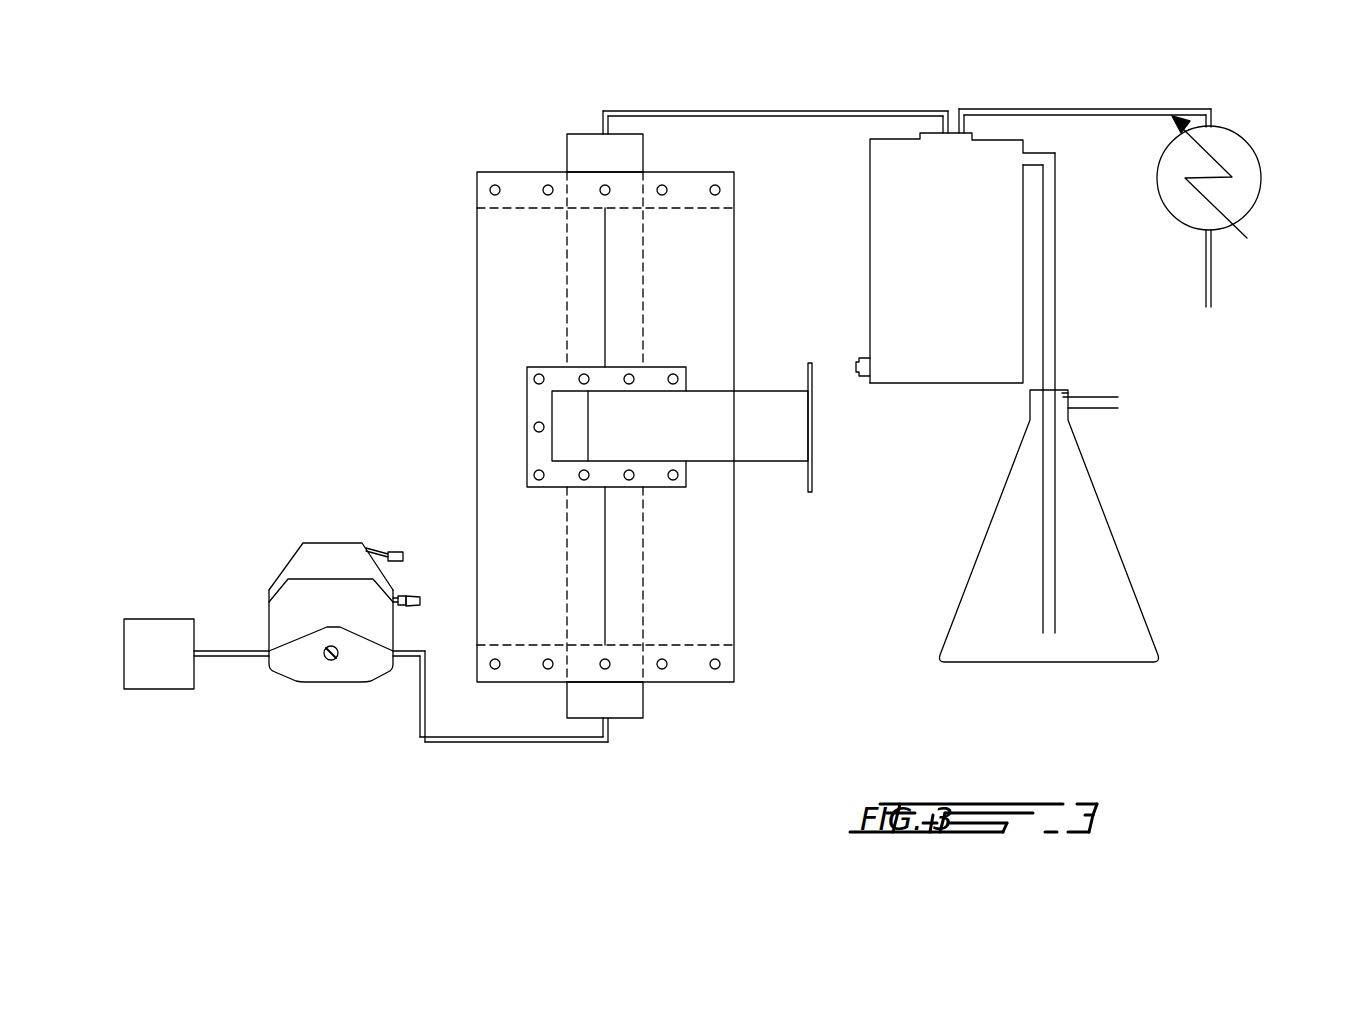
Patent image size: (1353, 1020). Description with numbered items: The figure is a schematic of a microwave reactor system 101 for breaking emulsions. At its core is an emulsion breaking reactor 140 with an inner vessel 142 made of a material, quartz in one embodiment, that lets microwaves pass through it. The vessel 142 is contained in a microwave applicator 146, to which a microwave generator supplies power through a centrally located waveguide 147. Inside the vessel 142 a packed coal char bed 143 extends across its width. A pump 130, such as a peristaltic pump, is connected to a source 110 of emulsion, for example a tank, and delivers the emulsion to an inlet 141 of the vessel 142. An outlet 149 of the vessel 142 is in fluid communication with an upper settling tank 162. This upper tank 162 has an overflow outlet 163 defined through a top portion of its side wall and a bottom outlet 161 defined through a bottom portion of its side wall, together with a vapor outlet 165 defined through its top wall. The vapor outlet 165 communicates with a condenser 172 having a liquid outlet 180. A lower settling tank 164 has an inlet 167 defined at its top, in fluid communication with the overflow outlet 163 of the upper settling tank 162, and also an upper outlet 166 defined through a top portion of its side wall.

The microwave reactor system 101 is at (212, 320).
The source of emulsion 110 is at (158, 690).
The pump 130 is at (277, 607).
The emulsion breaking reactor 140 is at (395, 325).
The inlet 141 is at (625, 718).
The inner vessel 142 is at (643, 700).
The packed coal char bed 143 is at (634, 557).
The microwave applicator 146 is at (477, 208).
The waveguide 147 is at (812, 432).
The outlet 149 is at (600, 134).
The bottom outlet 161 is at (857, 364).
The upper settling tank 162 is at (920, 385).
The overflow outlet 163 is at (1050, 160).
The lower settling tank 164 is at (990, 586).
The vapor outlet 165 is at (968, 108).
The upper outlet 166 is at (1118, 401).
The inlet 167 is at (1062, 393).
The condenser 172 is at (1222, 133).
The liquid outlet 180 is at (1211, 307).